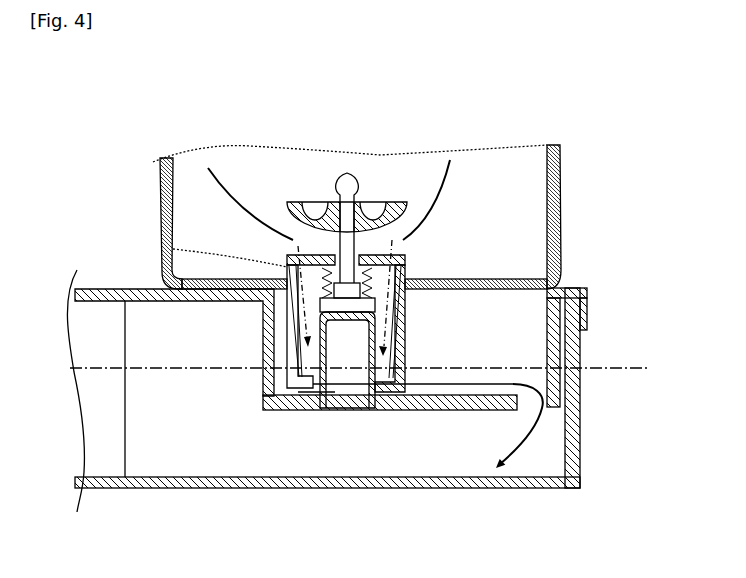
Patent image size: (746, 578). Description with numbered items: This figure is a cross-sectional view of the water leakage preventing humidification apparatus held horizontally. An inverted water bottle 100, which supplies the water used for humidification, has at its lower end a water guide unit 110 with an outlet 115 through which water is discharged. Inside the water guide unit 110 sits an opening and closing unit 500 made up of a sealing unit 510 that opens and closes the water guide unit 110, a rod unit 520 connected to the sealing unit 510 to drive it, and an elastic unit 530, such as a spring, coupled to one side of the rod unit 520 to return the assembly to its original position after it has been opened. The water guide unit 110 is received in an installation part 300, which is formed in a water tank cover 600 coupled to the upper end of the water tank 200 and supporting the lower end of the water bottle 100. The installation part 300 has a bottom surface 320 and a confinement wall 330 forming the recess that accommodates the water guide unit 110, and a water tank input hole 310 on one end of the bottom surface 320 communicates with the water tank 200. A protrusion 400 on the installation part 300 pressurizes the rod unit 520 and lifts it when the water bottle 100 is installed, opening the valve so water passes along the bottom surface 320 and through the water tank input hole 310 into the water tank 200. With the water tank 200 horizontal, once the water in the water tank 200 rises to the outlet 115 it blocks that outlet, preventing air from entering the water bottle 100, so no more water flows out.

The water bottle 100 is at (562, 172).
The water guide unit 110 is at (410, 260).
The outlet 115 is at (300, 393).
The water tank 200 is at (182, 488).
The installation part 300 is at (413, 420).
The water tank input hole 310 is at (524, 408).
The bottom surface 320 is at (461, 411).
The confinement wall 330 is at (260, 387).
The protrusion 400 is at (347, 318).
The opening and closing unit 500 is at (327, 84).
The sealing unit 510 is at (288, 254).
The rod unit 520 is at (298, 244).
The elastic unit 530 is at (173, 247).
The water tank cover 600 is at (573, 287).